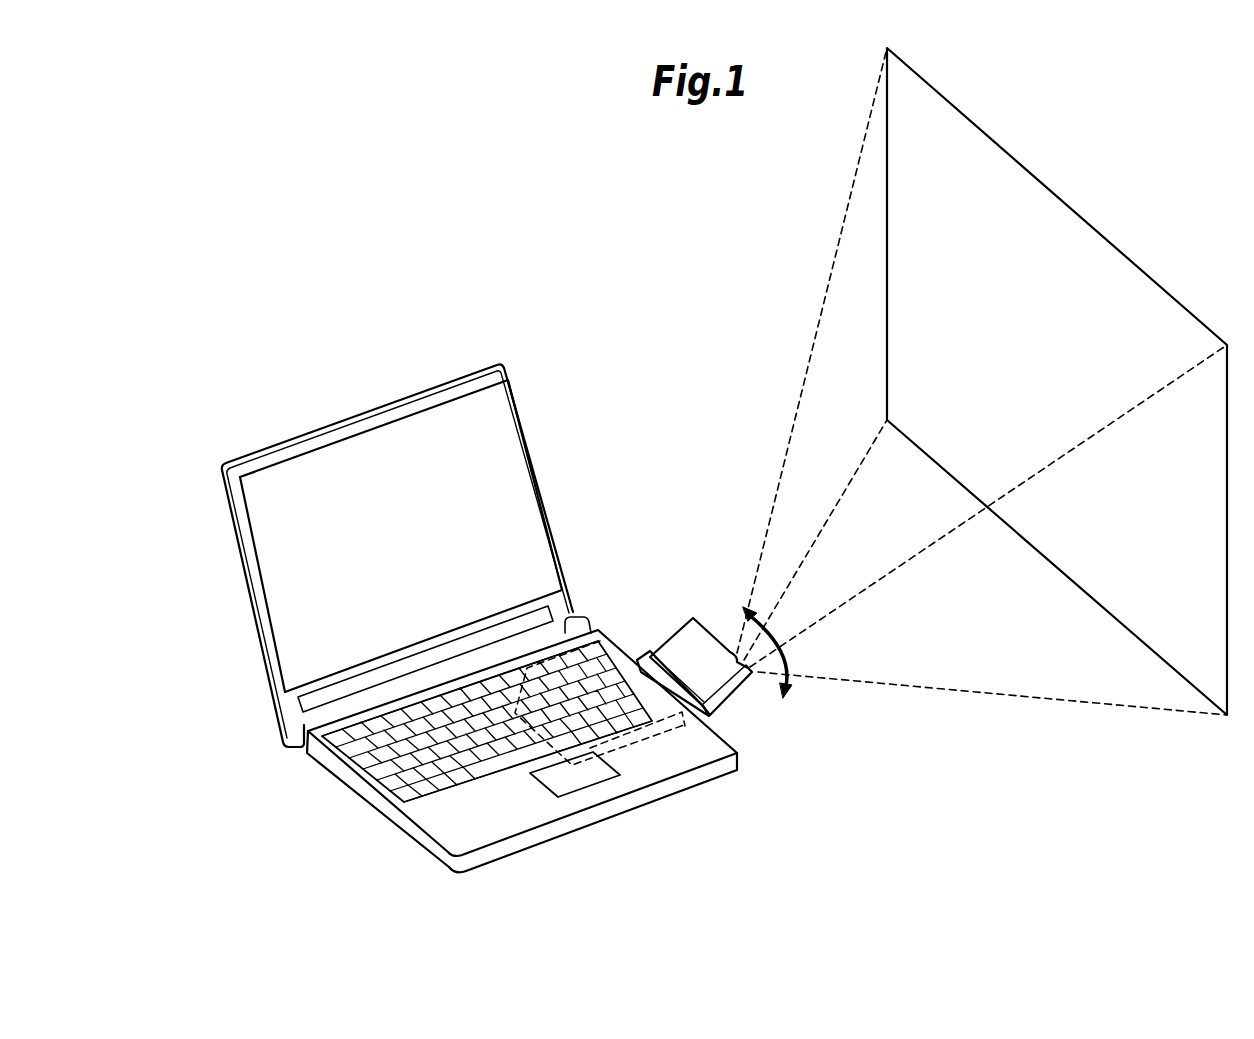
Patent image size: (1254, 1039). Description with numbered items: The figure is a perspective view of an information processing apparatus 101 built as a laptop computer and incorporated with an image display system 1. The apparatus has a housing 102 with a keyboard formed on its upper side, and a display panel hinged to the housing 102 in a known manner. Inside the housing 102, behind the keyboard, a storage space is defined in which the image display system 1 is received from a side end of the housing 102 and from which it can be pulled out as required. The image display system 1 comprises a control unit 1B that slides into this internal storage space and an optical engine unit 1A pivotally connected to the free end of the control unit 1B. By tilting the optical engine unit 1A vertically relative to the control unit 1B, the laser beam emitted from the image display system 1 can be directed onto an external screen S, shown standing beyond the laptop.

The image display system 1 is at (687, 572).
The optical engine unit 1A is at (667, 639).
The control unit 1B is at (642, 657).
The information processing apparatus 101 is at (268, 440).
The housing 102 is at (597, 825).
The external screen S is at (905, 188).